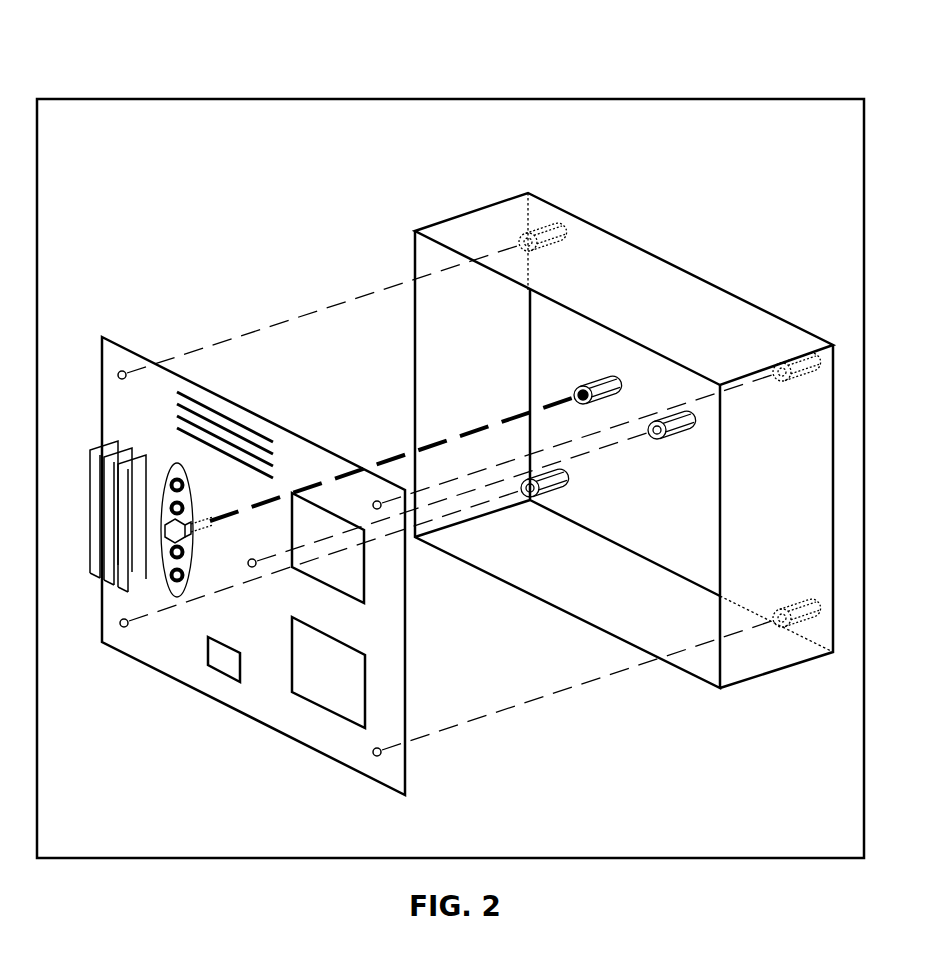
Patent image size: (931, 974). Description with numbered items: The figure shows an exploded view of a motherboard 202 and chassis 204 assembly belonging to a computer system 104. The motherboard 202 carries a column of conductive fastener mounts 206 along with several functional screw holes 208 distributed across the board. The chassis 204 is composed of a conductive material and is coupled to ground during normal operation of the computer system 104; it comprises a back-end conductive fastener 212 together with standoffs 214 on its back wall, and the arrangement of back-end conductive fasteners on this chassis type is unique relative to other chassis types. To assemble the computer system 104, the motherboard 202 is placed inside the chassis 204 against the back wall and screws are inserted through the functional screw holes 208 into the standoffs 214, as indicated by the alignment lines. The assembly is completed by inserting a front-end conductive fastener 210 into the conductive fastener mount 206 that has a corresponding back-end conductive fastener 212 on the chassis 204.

The computer system 104 is at (225, 99).
The motherboard 202 is at (100, 352).
The chassis 204 is at (450, 218).
The conductive fastener mounts 206 is at (168, 470).
The functional screw holes 208 is at (254, 568).
The front-end conductive fastener 210 is at (192, 533).
The back-end conductive fastener 212 is at (615, 387).
The standoffs 214 is at (690, 432).